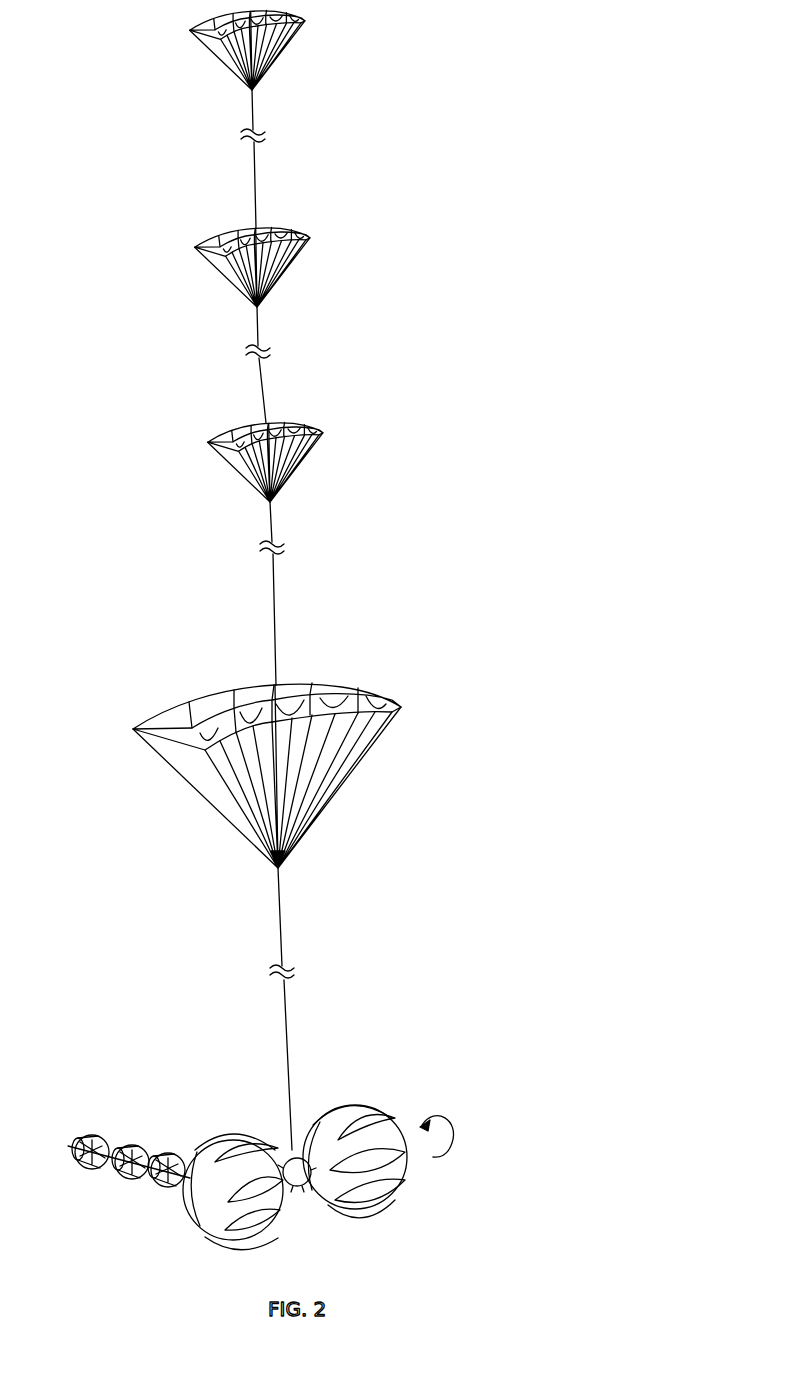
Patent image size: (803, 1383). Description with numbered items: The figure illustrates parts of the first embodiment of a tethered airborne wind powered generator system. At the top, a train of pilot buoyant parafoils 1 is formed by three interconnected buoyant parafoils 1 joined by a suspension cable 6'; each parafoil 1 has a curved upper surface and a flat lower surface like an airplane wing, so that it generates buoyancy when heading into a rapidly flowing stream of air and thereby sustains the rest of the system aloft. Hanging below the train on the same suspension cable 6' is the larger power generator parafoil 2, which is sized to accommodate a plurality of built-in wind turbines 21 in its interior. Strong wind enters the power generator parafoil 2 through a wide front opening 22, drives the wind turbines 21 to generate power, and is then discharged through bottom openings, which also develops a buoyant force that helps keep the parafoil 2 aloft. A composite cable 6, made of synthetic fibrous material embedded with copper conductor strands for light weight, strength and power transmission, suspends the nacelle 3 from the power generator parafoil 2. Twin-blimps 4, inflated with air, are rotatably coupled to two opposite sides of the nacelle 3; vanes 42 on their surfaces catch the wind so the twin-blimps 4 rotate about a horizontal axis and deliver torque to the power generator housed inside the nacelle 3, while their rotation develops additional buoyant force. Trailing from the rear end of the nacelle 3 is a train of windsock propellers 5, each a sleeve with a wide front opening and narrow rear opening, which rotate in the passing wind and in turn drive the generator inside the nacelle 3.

The pilot buoyant parafoil 1 is at (295, 53).
The power generator parafoil 2 is at (238, 700).
The built-in wind turbine 21 is at (185, 685).
The wide front opening 22 is at (289, 739).
The nacelle 3 is at (303, 1205).
The twin-blimps 4 is at (299, 1163).
The vane 42 is at (403, 1128).
The windsock propeller 5 is at (133, 1135).
The composite cable 6 is at (338, 1009).
The suspension cable 6' is at (204, 387).